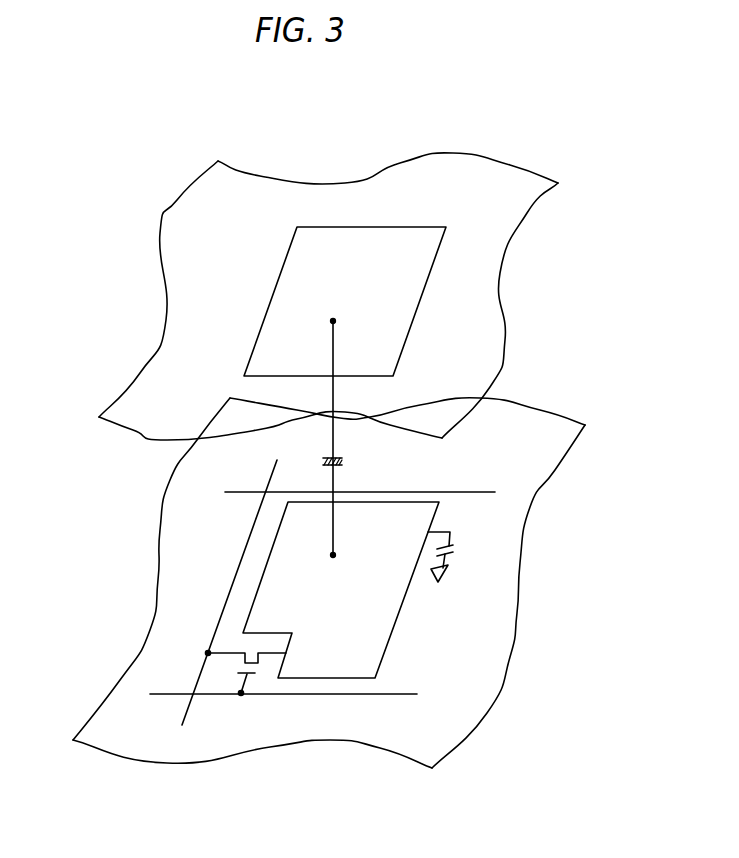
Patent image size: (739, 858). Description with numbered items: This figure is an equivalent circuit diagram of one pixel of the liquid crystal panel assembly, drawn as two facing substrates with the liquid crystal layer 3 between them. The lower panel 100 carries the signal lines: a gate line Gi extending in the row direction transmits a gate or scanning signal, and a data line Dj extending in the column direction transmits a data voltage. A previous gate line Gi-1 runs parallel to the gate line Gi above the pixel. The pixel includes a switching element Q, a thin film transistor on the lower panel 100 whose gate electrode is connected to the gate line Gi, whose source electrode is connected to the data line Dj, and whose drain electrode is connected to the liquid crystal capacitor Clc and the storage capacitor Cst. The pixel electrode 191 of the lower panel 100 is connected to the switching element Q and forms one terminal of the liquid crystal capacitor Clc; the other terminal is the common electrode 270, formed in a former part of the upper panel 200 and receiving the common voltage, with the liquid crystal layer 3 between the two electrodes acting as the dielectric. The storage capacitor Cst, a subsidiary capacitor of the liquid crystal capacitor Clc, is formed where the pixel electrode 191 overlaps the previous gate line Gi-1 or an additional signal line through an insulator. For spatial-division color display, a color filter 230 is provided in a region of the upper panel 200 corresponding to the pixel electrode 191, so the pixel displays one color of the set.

The liquid crystal layer 3 is at (88, 501).
The lower panel 100 is at (540, 568).
The upper panel 200 is at (524, 321).
The common electrode 270 is at (500, 278).
The color filter 230 is at (418, 313).
The pixel electrode 191 is at (395, 630).
The liquid crystal capacitor Clc is at (350, 438).
The storage capacitor Cst is at (456, 557).
The switching element Q is at (246, 673).
The data line Dj is at (229, 592).
The gate line Gi is at (283, 681).
The previous gate line Gi-1 is at (349, 507).